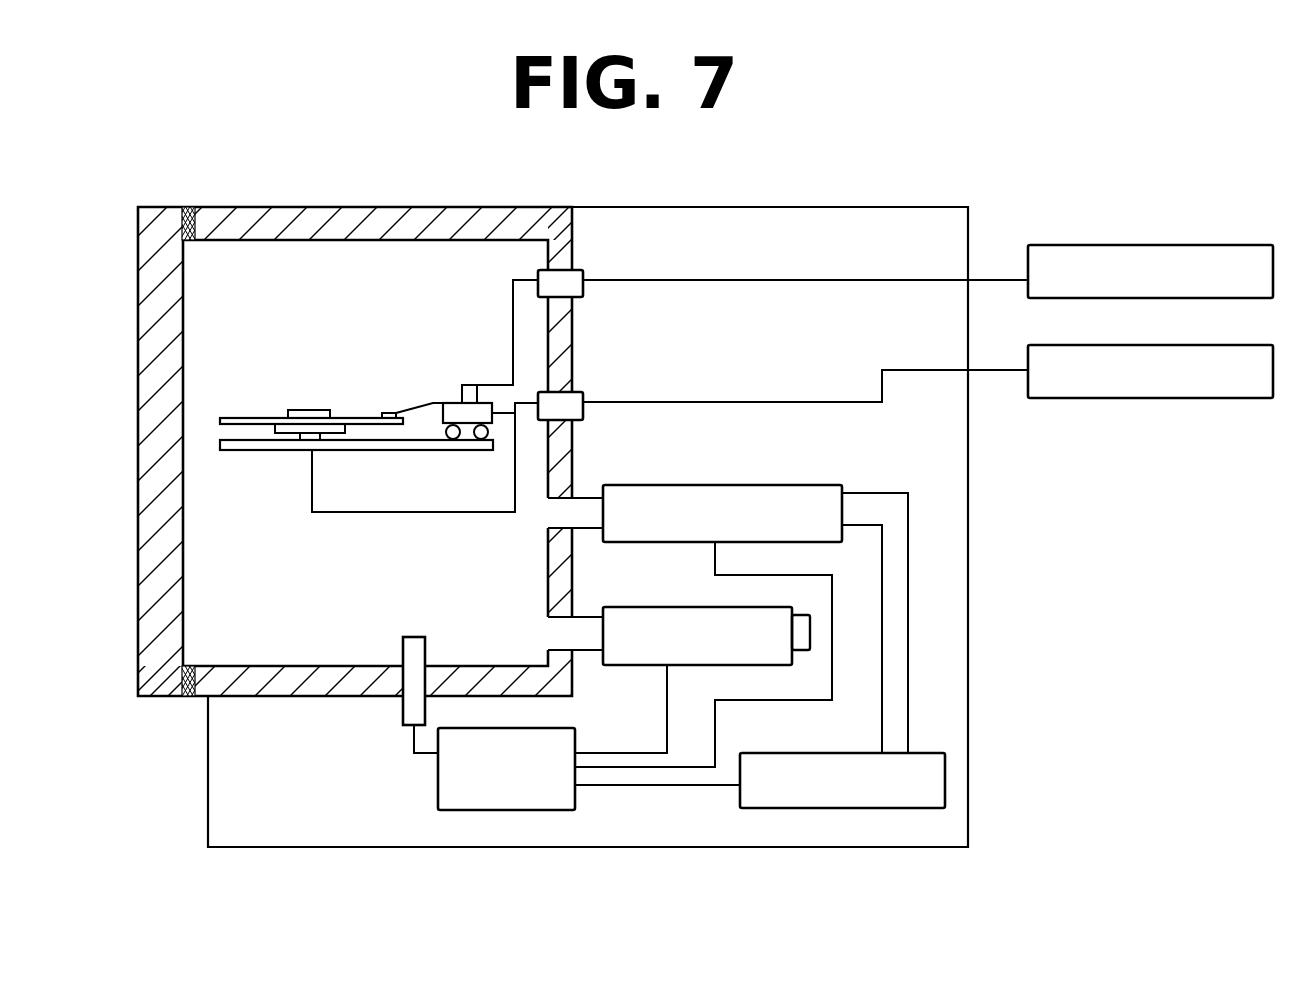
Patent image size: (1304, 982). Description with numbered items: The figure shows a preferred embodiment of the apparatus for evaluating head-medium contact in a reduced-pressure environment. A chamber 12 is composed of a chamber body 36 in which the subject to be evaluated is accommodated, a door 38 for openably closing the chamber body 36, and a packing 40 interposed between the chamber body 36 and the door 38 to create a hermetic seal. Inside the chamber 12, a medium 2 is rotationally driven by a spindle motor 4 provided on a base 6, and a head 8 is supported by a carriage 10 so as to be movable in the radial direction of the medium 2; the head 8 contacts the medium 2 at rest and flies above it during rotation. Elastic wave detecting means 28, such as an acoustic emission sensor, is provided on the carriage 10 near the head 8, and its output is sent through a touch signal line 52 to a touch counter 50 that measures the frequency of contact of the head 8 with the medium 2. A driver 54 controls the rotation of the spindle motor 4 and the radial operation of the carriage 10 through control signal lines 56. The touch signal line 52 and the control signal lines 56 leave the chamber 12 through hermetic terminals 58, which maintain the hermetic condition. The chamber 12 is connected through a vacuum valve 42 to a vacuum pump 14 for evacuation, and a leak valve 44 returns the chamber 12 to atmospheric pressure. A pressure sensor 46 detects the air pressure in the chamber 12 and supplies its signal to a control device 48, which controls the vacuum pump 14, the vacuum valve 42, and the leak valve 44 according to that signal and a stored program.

The medium 2 is at (243, 418).
The spindle motor 4 is at (310, 410).
The base 6 is at (263, 450).
The head 8 is at (388, 413).
The carriage 10 is at (448, 413).
The chamber 12 is at (575, 436).
The vacuum pump 14 is at (945, 792).
The elastic wave detecting means 28 is at (468, 385).
The chamber body 36 is at (470, 207).
The door 38 is at (152, 207).
The packing 40 is at (188, 207).
The vacuum valve 42 is at (738, 485).
The leak valve 44 is at (650, 607).
The pressure sensor 46 is at (403, 640).
The control device 48 is at (438, 795).
The touch counter 50 is at (1148, 245).
The touch signal line 52 is at (510, 310).
The driver 54 is at (1148, 398).
The control signal lines 56 is at (508, 417).
The hermetic terminals 58 is at (585, 270).